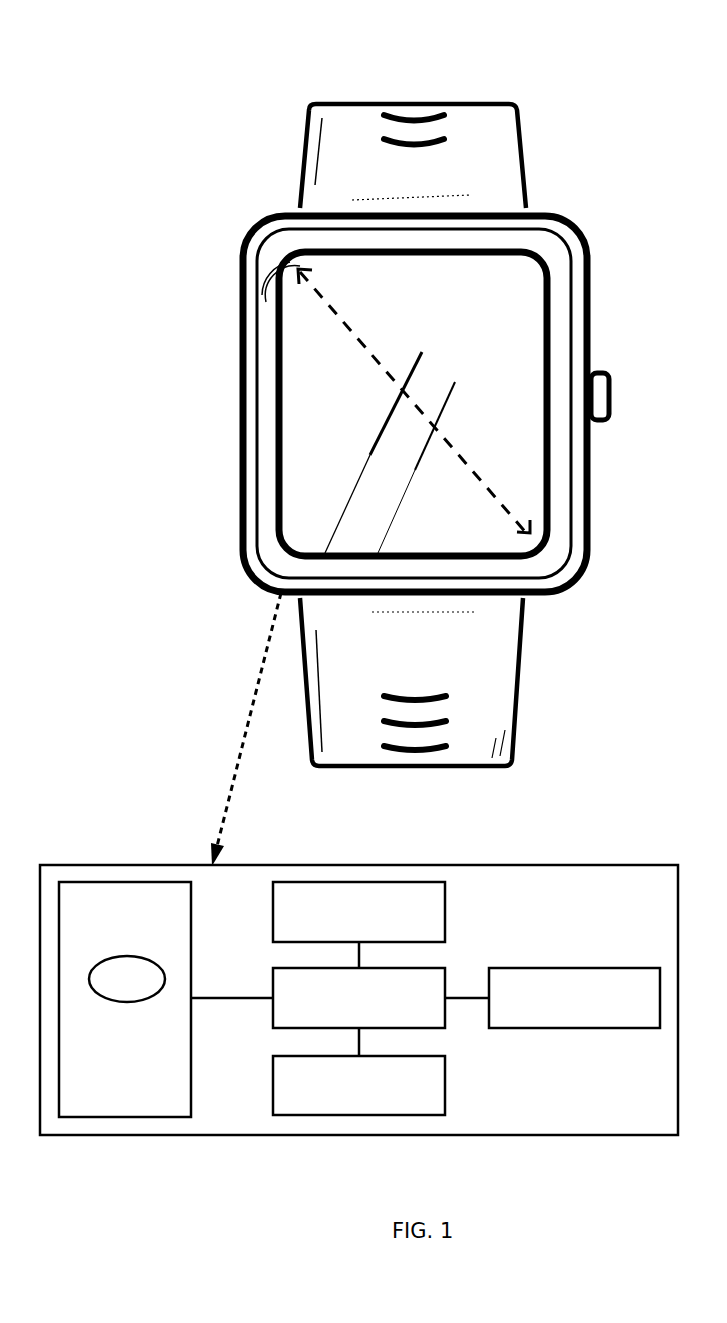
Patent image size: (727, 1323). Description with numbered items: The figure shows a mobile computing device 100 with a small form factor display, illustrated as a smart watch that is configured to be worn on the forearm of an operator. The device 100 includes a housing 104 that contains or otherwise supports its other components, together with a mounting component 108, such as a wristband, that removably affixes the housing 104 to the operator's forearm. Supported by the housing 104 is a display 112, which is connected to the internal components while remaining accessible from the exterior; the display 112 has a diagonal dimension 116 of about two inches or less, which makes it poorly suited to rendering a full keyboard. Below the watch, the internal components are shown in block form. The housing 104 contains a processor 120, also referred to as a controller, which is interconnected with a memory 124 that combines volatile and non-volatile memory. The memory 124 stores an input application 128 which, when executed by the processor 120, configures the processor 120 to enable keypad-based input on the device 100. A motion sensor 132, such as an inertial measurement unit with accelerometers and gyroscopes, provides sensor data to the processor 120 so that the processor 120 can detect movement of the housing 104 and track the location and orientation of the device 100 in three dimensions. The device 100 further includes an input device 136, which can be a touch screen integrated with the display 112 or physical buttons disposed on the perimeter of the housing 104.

The mobile computing device 100 is at (374, 384).
The housing 104 is at (237, 320).
The mounting component 108 is at (483, 167).
The display 112 is at (312, 393).
The diagonal dimension 116 is at (414, 402).
The processor 120 is at (341, 997).
The memory 124 is at (107, 916).
The input application 128 is at (109, 990).
The motion sensor 132 is at (341, 911).
The input device 136 is at (341, 1084).